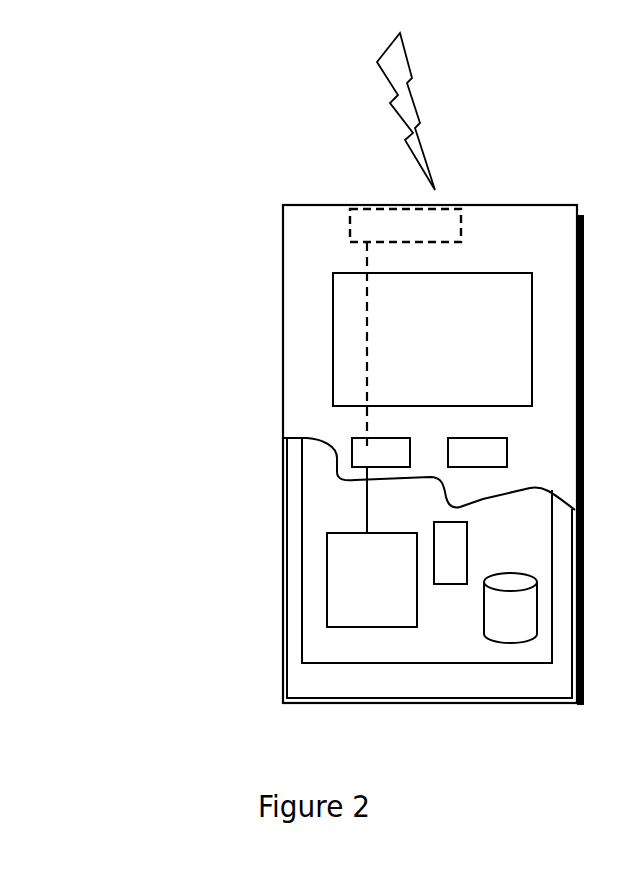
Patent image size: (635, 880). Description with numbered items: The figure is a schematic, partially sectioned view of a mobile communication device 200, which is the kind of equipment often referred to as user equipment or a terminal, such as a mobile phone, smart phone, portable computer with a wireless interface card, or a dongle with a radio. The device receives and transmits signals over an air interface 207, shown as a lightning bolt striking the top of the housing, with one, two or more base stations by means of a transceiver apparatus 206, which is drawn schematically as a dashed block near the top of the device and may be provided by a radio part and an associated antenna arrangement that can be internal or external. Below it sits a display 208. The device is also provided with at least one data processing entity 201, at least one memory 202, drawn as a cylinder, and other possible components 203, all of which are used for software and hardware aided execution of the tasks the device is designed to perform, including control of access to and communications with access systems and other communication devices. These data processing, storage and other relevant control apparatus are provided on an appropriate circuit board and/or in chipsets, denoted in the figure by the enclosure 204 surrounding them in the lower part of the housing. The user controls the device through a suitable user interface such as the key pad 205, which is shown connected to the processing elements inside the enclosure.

The mobile communication device 200 is at (283, 248).
The data processing entity 201 is at (333, 563).
The memory 202 is at (503, 619).
The other possible components 203 is at (450, 537).
The circuit board and/or chipsets 204 is at (325, 645).
The key pad 205 is at (357, 453).
The transceiver apparatus 206 is at (450, 220).
The air interface 207 is at (440, 133).
The display 208 is at (350, 325).